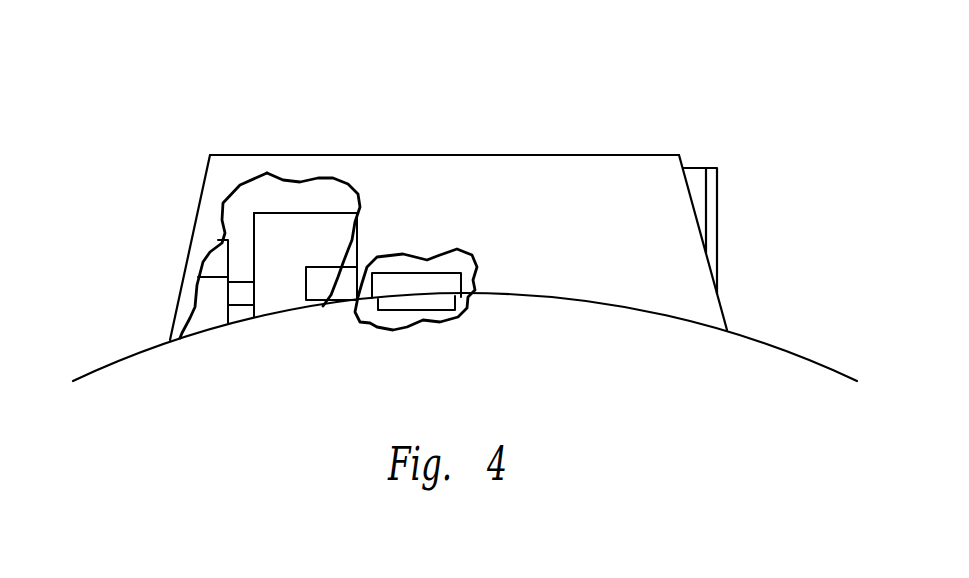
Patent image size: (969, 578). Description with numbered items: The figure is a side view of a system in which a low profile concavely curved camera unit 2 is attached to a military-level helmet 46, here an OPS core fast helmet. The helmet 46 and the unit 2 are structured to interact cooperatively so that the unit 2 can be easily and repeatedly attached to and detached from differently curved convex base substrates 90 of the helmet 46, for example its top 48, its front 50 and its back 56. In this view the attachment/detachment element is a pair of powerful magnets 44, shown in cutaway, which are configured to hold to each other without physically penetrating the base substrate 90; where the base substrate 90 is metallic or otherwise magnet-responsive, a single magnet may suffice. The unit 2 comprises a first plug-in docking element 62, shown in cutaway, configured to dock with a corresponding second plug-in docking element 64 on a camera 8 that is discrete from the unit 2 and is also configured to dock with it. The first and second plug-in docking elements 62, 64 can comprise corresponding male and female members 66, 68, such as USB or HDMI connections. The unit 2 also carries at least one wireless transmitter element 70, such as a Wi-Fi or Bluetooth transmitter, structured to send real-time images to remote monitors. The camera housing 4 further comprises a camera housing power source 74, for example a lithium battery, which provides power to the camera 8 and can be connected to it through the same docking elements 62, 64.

The low profile concavely curved camera unit 2 is at (448, 214).
The camera housing 4 is at (538, 155).
The camera 8 is at (461, 227).
The magnets 44 is at (451, 312).
The military-level helmet 46 is at (740, 373).
The top 48 is at (490, 293).
The front 50 is at (461, 333).
The back 56 is at (110, 364).
The first plug-in docking element 62 is at (189, 319).
The second plug-in docking element 64 is at (253, 258).
The male member 66 is at (280, 262).
The female member 68 is at (238, 305).
The wireless transmitter element 70 is at (323, 267).
The camera housing power source 74 is at (217, 260).
The convex base substrate 90 is at (532, 297).